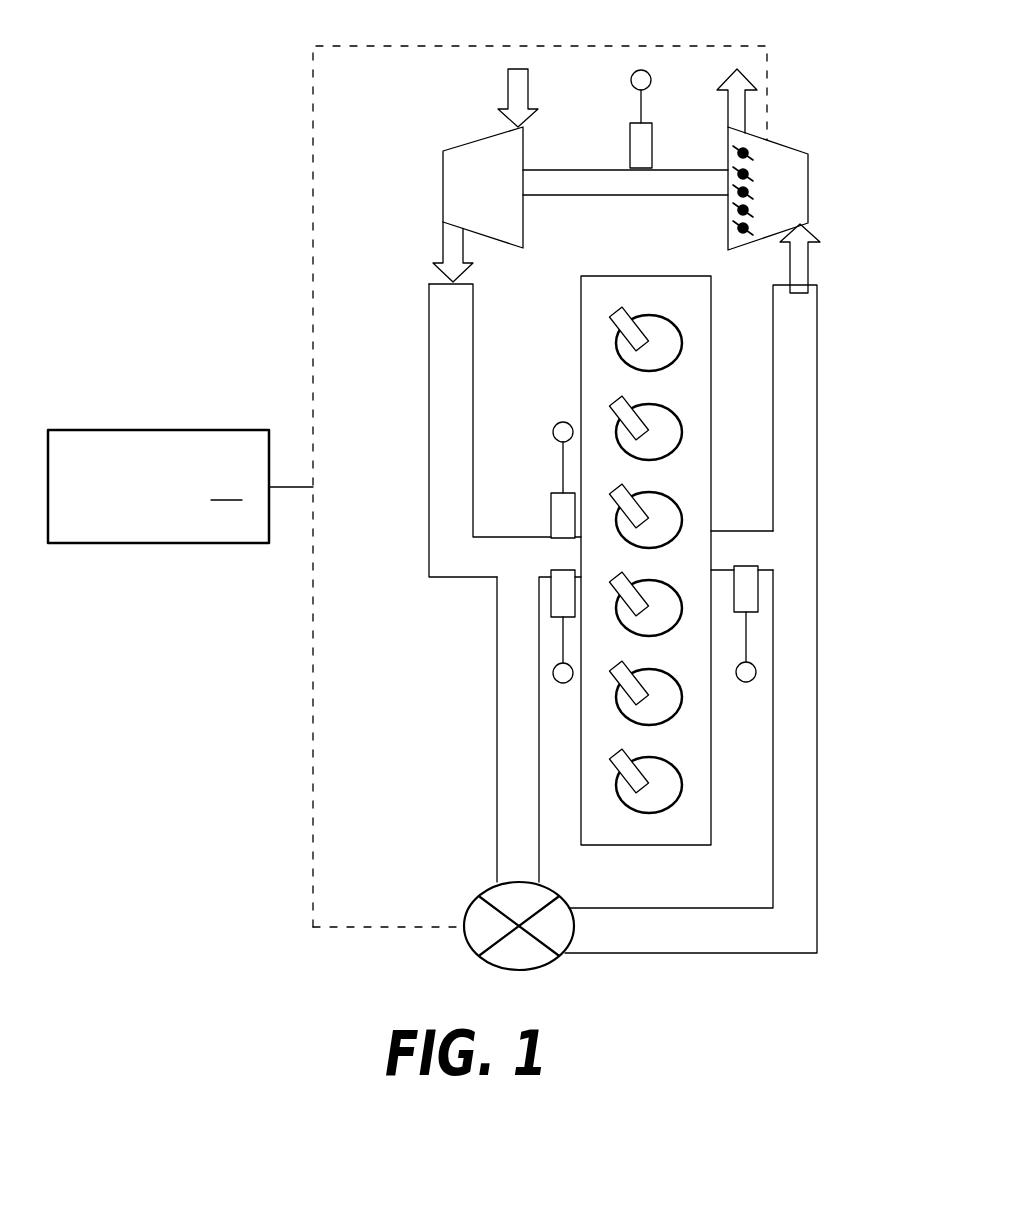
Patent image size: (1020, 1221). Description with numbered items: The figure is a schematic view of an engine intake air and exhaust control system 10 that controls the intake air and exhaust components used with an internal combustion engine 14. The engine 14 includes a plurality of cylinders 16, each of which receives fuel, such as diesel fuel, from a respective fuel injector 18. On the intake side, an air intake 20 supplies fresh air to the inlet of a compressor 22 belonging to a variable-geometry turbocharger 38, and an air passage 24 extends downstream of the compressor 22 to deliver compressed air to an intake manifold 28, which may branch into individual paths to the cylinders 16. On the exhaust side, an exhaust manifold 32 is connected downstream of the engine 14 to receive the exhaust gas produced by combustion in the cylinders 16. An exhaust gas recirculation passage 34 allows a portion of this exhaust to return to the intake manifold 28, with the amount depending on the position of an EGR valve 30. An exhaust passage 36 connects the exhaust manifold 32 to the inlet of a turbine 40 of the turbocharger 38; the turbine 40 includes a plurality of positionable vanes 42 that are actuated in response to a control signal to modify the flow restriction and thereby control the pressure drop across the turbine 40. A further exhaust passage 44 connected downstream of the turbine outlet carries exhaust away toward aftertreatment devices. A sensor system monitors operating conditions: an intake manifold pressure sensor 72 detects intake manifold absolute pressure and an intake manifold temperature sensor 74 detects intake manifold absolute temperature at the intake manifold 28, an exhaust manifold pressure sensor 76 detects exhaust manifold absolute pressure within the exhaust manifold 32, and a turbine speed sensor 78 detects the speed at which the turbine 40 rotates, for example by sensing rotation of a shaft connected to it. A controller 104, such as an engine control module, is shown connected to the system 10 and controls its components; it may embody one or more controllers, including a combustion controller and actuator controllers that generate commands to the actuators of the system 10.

The engine intake air and exhaust control system 10 is at (198, 111).
The internal combustion engine 14 is at (597, 287).
The cylinders 16 is at (660, 308).
The fuel injector 18 is at (603, 325).
The air intake 20 is at (510, 96).
The compressor 22 is at (452, 184).
The air passage 24 is at (440, 398).
The intake manifold 28 is at (545, 561).
The EGR valve 30 is at (478, 912).
The exhaust manifold 32 is at (755, 555).
The exhaust gas recirculation (EGR) passage 34 is at (808, 833).
The exhaust passage 36 is at (807, 347).
The variable-geometry turbocharger (VGT) 38 is at (822, 87).
The turbine 40 is at (800, 177).
The positionable vanes 42 is at (738, 147).
The exhaust passage 44 is at (733, 104).
The intake manifold pressure sensor 72 is at (560, 503).
The intake manifold temperature sensor 74 is at (560, 600).
The exhaust manifold pressure sensor 76 is at (750, 607).
The turbine speed sensor 78 is at (633, 135).
The controller 104 is at (180, 486).